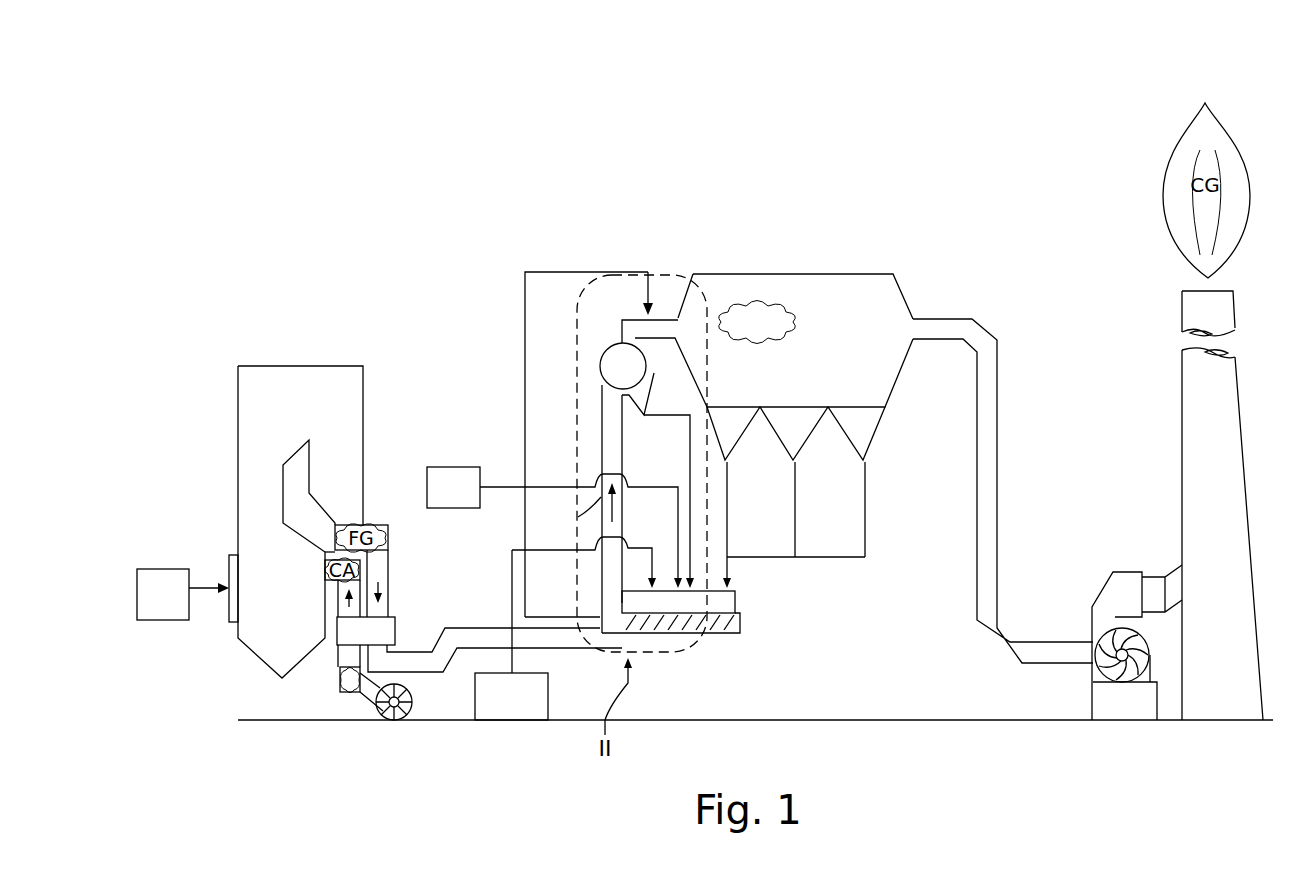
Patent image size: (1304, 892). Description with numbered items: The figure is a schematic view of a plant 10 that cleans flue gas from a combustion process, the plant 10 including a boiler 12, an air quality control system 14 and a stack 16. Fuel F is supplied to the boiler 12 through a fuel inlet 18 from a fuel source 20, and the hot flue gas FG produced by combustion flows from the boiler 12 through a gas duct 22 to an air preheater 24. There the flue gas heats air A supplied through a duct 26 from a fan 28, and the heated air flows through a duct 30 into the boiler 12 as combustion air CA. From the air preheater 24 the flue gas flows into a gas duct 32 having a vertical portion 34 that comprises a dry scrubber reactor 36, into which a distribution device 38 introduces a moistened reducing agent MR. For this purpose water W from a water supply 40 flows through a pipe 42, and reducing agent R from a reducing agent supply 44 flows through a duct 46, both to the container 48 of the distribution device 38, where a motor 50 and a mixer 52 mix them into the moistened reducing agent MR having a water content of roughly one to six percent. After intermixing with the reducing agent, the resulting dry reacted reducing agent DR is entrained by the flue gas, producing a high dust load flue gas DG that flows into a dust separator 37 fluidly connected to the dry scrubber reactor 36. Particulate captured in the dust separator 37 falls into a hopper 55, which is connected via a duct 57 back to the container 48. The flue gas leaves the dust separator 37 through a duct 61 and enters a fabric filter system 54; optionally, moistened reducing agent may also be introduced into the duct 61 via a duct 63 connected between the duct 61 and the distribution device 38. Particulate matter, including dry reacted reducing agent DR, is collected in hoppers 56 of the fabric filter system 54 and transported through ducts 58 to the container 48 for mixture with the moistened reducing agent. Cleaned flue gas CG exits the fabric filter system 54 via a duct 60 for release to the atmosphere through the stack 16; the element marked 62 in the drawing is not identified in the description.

The plant 10 is at (878, 170).
The boiler 12 is at (263, 655).
The air quality control system 14 is at (916, 290).
The stack 16 is at (1182, 393).
The fuel inlet 18 is at (230, 613).
The fuel source 20 is at (163, 569).
The gas duct 22 is at (377, 565).
The air preheater 24 is at (337, 640).
The duct 26 is at (340, 683).
The fan 28 is at (407, 722).
The duct 30 is at (338, 598).
The gas duct 32 is at (472, 637).
The vertical portion 34 is at (601, 423).
The dry scrubber reactor 36 is at (623, 508).
The dust separator 37 is at (602, 350).
The distribution device 38 is at (744, 608).
The water supply 40 is at (453, 462).
The pipe 42 is at (630, 483).
The reducing agent supply 44 is at (552, 700).
The duct 46 is at (510, 567).
The container 48 is at (672, 628).
The motor 50 is at (745, 622).
The mixer 52 is at (698, 630).
The fabric filter system 54 is at (812, 273).
The hopper 55 is at (650, 384).
The hoppers 56 is at (750, 462).
The duct 57 is at (687, 482).
The ducts 58 is at (728, 518).
The duct 60 is at (985, 325).
The duct 61 is at (623, 318).
The heat exchanger 62 is at (366, 631).
The duct 63 is at (560, 271).